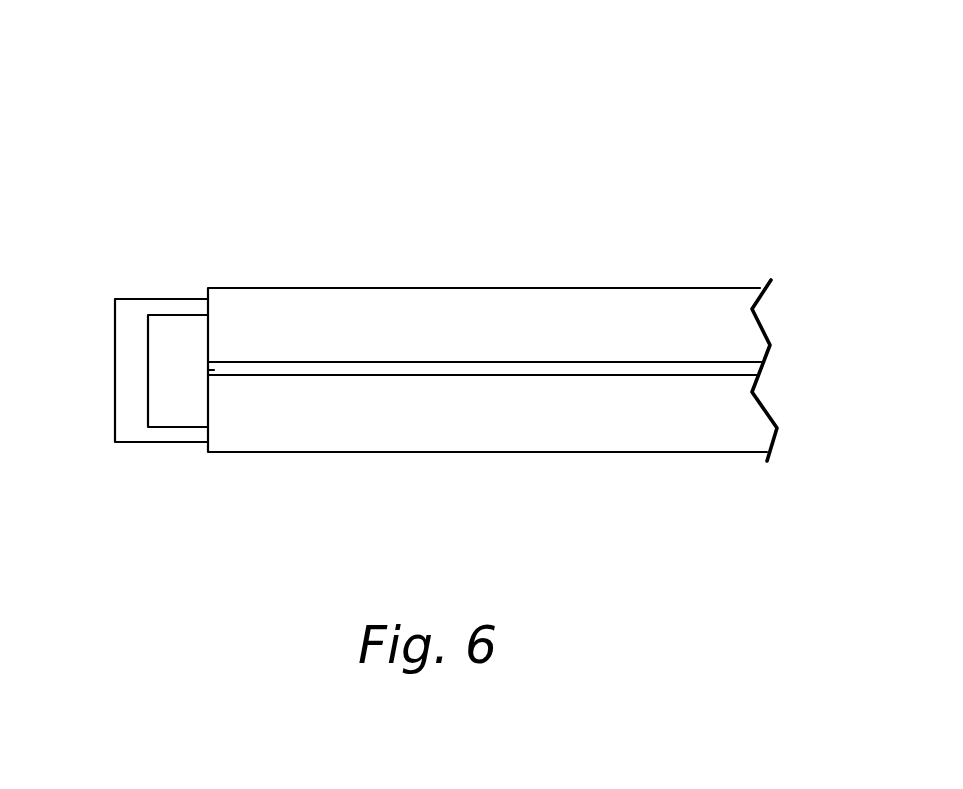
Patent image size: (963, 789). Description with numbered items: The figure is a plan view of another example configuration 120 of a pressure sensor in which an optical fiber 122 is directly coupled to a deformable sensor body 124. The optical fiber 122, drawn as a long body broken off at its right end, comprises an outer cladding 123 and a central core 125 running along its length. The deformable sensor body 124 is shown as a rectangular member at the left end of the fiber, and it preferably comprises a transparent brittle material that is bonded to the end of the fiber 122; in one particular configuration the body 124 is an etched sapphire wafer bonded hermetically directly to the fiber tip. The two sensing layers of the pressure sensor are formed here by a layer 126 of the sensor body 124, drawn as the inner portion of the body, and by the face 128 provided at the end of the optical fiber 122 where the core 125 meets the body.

The example configuration 120 is at (439, 253).
The optical fiber 122 is at (538, 337).
The cladding 123 is at (683, 320).
The deformable sensor body 124 is at (109, 358).
The core 125 is at (728, 367).
The layer 126 is at (128, 395).
The face 128 is at (213, 377).